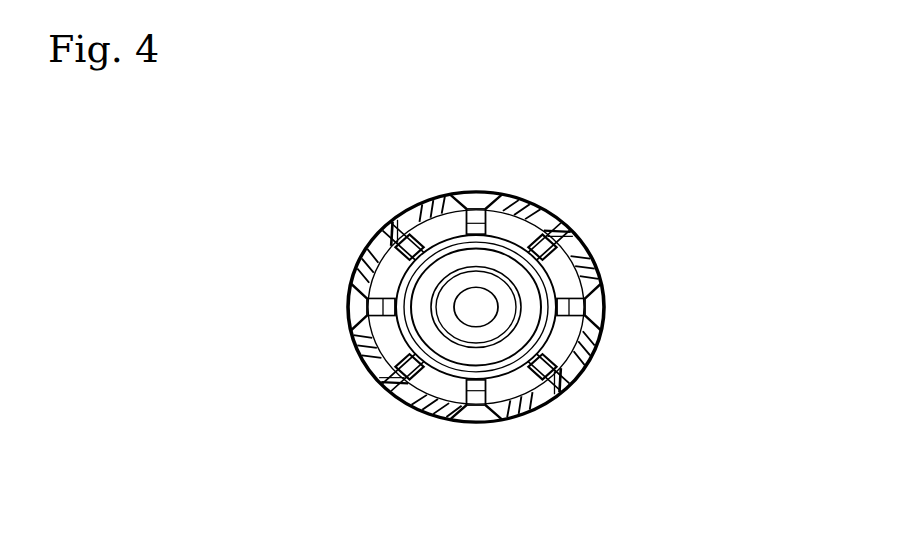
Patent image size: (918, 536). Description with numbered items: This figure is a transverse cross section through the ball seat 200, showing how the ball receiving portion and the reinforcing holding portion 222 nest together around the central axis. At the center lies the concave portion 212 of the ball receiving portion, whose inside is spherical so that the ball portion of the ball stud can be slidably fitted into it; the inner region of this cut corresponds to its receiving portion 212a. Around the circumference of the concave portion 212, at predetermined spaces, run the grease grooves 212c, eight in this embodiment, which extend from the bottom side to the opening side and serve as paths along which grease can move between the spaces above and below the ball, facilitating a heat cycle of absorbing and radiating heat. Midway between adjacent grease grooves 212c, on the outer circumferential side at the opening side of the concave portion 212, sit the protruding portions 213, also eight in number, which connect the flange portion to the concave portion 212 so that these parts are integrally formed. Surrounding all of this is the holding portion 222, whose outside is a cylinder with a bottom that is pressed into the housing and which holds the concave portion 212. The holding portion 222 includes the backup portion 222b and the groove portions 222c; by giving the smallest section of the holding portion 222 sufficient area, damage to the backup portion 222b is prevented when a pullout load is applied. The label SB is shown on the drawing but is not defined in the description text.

The ball seat 200 is at (523, 182).
The stator base SB is at (478, 196).
The concave portion 212 is at (398, 268).
The receiving portion 212a is at (497, 355).
The grease grooves 212c is at (437, 408).
The protruding portions 213 is at (420, 207).
The holding portion 222 is at (366, 377).
The backup portion 222b is at (450, 190).
The groove portions 222c is at (552, 238).